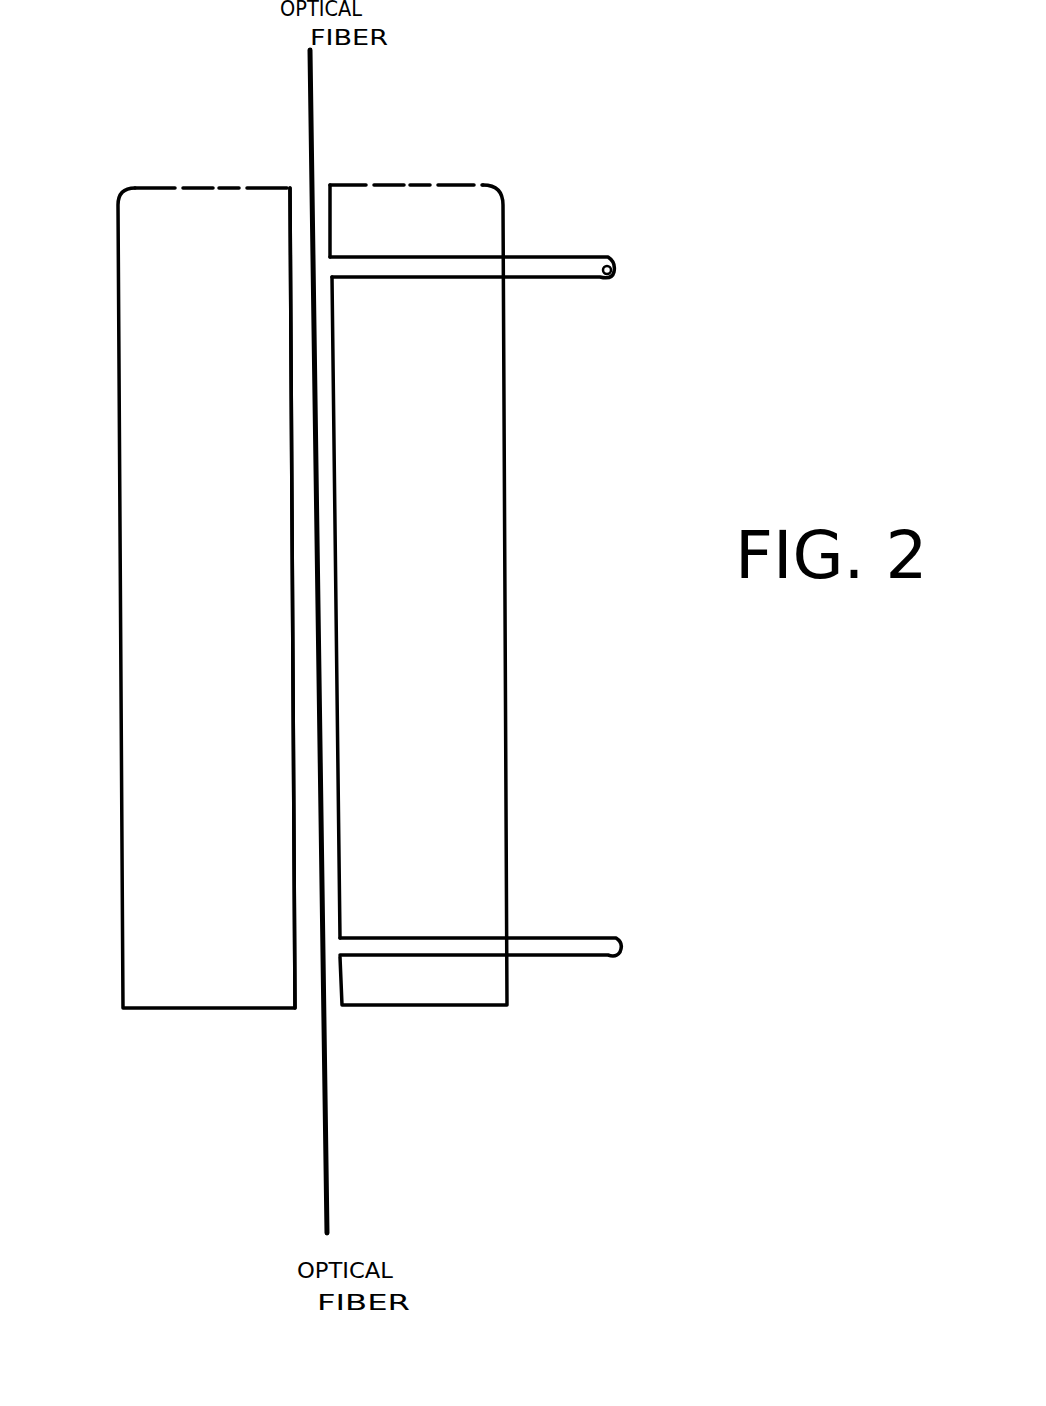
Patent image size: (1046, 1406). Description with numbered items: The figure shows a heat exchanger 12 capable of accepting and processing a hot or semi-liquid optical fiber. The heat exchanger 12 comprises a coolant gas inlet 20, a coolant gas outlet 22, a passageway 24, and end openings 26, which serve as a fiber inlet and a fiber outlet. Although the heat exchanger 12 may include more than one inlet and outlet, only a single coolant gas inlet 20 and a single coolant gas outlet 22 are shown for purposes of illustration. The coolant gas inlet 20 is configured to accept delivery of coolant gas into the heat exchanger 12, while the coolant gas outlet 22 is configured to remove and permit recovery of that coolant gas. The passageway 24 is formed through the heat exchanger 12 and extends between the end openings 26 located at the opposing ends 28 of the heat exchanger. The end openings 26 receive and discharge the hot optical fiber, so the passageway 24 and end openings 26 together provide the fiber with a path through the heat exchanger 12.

The heat exchanger 12 is at (203, 972).
The coolant gas inlet 20 is at (543, 937).
The coolant gas outlet 22 is at (527, 250).
The passageway 24 is at (307, 722).
The end openings 26 is at (297, 178).
The opposing ends 28 is at (162, 188).